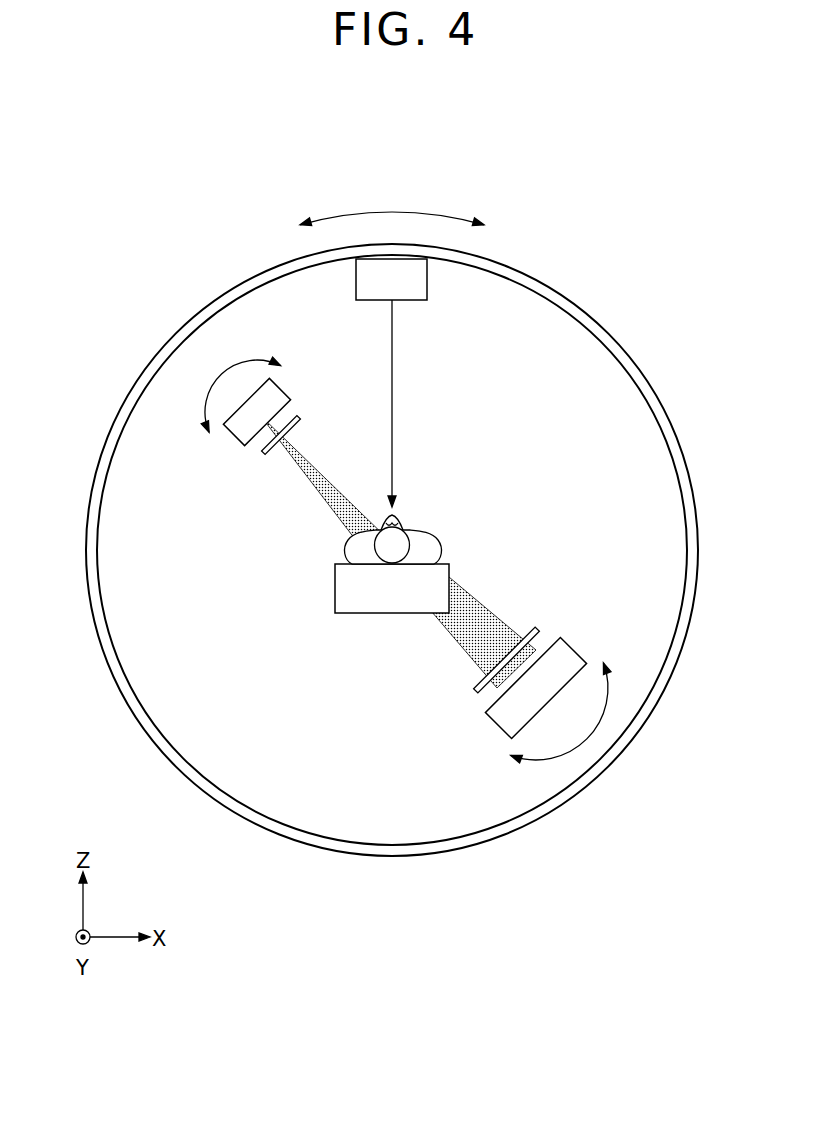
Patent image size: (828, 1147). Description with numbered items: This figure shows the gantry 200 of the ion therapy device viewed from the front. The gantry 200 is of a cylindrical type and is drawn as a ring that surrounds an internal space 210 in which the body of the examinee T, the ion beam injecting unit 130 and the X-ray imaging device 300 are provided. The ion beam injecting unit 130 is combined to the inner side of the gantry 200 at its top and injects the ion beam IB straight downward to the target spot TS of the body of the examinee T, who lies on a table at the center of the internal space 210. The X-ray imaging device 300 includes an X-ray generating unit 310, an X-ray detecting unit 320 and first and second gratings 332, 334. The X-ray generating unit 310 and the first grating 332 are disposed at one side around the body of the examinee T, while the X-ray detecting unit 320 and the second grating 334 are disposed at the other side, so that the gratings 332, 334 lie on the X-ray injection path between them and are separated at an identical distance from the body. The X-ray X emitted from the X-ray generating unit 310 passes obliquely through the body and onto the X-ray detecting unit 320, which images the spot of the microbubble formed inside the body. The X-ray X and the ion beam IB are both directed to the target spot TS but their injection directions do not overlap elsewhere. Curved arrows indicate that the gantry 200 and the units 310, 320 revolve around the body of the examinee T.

The gantry 200 is at (585, 308).
The internal space 210 is at (242, 719).
The ion beam injecting unit 130 is at (417, 283).
The X-ray imaging device 300 is at (310, 384).
The X-ray generating unit 310 is at (240, 432).
The X-ray detecting unit 320 is at (500, 722).
The first grating 332 is at (263, 453).
The second grating 334 is at (477, 692).
The ion beam IB is at (395, 400).
The target spot TS is at (406, 502).
The examinee T is at (452, 527).
The X-ray X is at (497, 613).